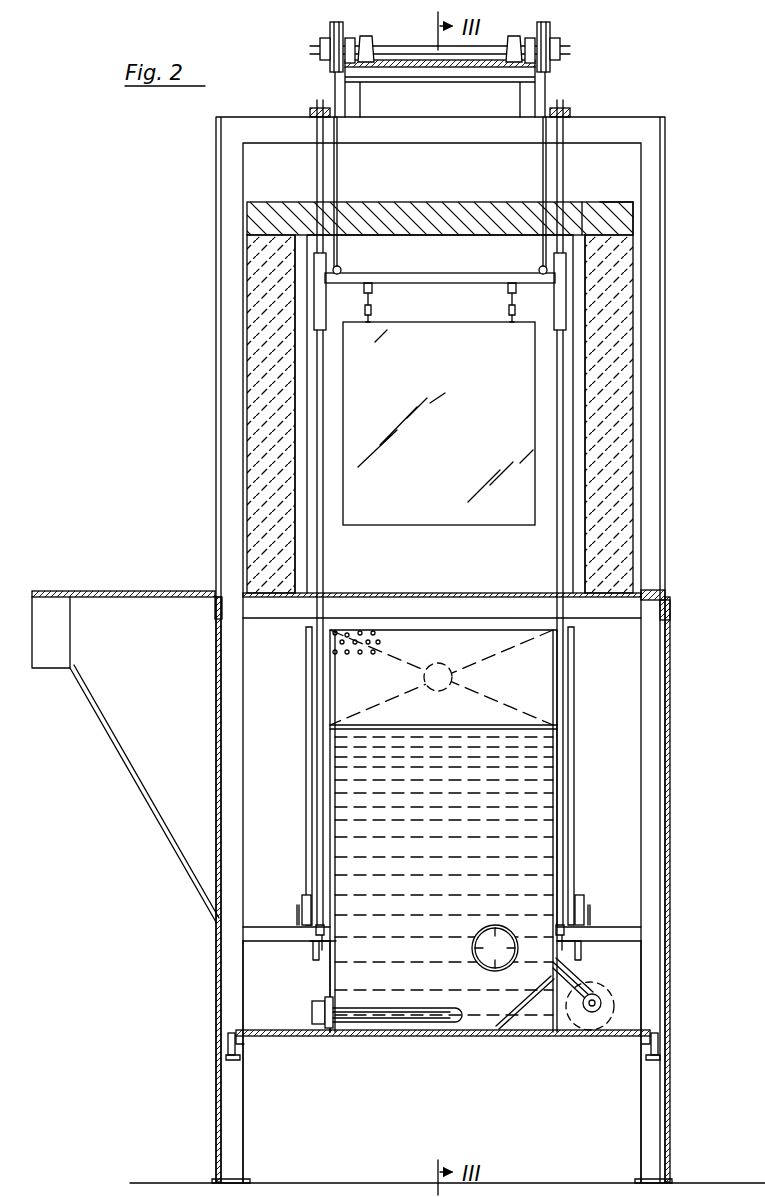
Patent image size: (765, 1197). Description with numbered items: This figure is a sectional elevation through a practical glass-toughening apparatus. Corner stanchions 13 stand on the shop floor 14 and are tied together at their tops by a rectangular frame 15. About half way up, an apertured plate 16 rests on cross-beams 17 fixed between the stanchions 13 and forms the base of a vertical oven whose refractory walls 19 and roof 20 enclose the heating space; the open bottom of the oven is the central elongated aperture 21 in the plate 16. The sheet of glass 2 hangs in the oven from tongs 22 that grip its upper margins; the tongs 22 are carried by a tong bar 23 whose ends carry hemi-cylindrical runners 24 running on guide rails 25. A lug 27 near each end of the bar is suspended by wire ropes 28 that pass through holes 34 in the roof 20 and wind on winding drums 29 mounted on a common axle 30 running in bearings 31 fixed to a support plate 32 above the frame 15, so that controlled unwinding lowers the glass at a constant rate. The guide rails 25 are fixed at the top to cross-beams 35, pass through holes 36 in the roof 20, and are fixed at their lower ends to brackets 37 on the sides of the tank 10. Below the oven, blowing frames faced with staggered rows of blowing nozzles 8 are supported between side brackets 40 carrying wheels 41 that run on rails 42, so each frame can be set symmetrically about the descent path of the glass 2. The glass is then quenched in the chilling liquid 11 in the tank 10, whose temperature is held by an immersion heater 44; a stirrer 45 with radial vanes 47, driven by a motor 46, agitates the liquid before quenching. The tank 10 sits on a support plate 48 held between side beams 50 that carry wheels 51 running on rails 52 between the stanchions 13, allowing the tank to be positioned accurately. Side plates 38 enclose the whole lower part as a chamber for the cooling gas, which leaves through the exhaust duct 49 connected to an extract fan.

The sheet of glass 2 is at (453, 508).
The blowing nozzles 8 is at (380, 634).
The tank 10 is at (329, 976).
The chilling liquid 11 is at (444, 929).
The corner stanchions 13 is at (232, 985).
The shop floor 14 is at (176, 1181).
The rectangular frame 15 is at (667, 140).
The apertured plate 16 is at (645, 590).
The cross-beams 17 is at (220, 611).
The walls 19 is at (256, 405).
The roof 20 is at (626, 206).
The central elongated aperture 21 is at (356, 598).
The tongs 22 is at (365, 300).
The tong bar 23 is at (490, 282).
The hemi-cylindrical runners 24 is at (320, 266).
The guide rails 25 is at (316, 160).
The lug 27 is at (343, 271).
The wire ropes 28 is at (338, 190).
The winding drums 29 is at (329, 40).
The common axle 30 is at (462, 55).
The bearings 31 is at (363, 56).
The support plate 32 is at (406, 69).
The holes 34 is at (340, 216).
The cross-beams 35 is at (573, 112).
The holes 36 is at (566, 220).
The brackets 37 is at (314, 953).
The side plates 38 is at (214, 955).
The side brackets 40 is at (307, 821).
The wheels 41 is at (305, 900).
The rails 42 is at (297, 913).
The immersion heater 44 is at (405, 1023).
The stirrer 45 is at (498, 966).
The motor 46 is at (600, 991).
The radial vanes 47 is at (500, 935).
The support plate 48 is at (310, 1038).
The exhaust duct 49 is at (50, 606).
The side beams 50 is at (241, 1043).
The wheels 51 is at (228, 1041).
The rails 52 is at (232, 1060).